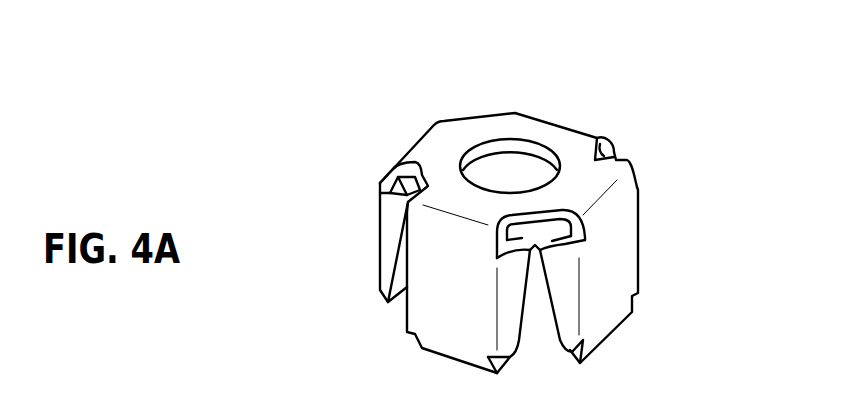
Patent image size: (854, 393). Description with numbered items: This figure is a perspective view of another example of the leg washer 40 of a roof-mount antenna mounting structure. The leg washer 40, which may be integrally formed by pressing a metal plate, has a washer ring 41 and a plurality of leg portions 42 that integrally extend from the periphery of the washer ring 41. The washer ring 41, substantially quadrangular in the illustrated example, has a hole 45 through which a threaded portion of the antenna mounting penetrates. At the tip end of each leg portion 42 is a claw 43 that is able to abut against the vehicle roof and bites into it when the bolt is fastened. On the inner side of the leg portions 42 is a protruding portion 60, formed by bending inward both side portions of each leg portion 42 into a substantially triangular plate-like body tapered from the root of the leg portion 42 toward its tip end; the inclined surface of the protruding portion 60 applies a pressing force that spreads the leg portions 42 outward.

The leg washer 40 is at (353, 204).
The washer ring 41 is at (568, 147).
The leg portion 42 is at (615, 260).
The claw 43 is at (380, 305).
The hole 45 is at (503, 148).
The protruding portion 60 is at (557, 280).